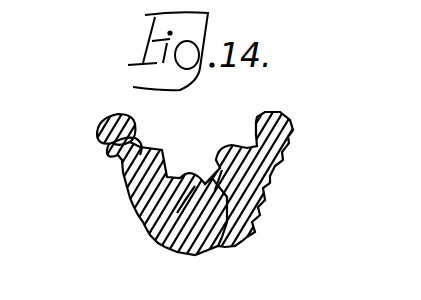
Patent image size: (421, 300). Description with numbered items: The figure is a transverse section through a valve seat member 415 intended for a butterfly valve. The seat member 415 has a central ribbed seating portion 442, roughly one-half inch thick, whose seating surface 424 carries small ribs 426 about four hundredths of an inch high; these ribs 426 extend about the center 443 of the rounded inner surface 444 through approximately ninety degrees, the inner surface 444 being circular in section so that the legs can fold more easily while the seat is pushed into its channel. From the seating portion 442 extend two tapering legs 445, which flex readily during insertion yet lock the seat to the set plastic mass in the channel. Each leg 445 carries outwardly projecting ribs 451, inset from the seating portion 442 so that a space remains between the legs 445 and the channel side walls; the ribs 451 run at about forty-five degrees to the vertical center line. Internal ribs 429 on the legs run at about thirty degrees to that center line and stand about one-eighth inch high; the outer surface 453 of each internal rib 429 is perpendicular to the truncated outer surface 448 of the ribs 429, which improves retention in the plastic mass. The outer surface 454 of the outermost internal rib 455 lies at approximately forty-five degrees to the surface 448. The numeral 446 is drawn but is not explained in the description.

The valve seat member 415 is at (115, 213).
The tapering legs 445 is at (102, 127).
The truncated outer surface 448 is at (132, 126).
The internal ribs 429 is at (133, 122).
The outer surface of outermost internal rib 454 is at (105, 150).
The outermost internal rib 455 is at (115, 162).
The outwardly projecting ribs 451 is at (125, 183).
The center of the rounded inner surface 443 is at (148, 237).
The ribbed seating portion 442 is at (173, 248).
The seating surface 424 is at (197, 250).
The rounded inner surface 444 is at (236, 238).
The ribs of the seating surface 426 is at (240, 238).
The serration 446 is at (263, 203).
The outer surface of internal ribs 453 is at (277, 162).